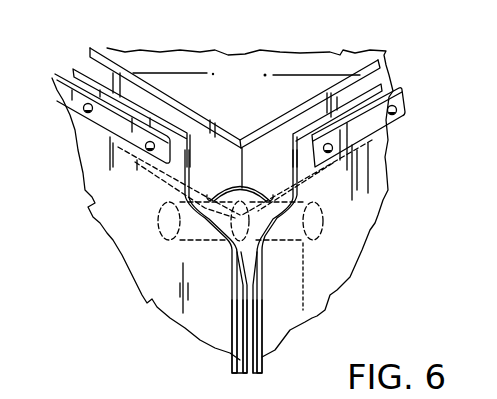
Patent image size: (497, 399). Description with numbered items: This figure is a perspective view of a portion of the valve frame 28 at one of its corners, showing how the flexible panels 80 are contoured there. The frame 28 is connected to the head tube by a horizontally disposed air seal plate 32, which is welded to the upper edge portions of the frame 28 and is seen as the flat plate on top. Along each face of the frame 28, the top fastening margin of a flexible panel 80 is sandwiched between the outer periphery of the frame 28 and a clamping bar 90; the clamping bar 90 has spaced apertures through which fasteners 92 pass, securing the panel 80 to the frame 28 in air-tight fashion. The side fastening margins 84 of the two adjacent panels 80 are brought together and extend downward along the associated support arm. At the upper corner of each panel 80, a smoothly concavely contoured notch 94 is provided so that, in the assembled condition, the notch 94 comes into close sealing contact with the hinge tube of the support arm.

The frame 28 is at (388, 83).
The air seal plate 32 is at (266, 72).
The flexible panel 80 is at (114, 240).
The side fastening margin 84 is at (233, 353).
The clamping bar 90 is at (112, 122).
The fasteners 92 is at (398, 108).
The notch 94 is at (277, 240).